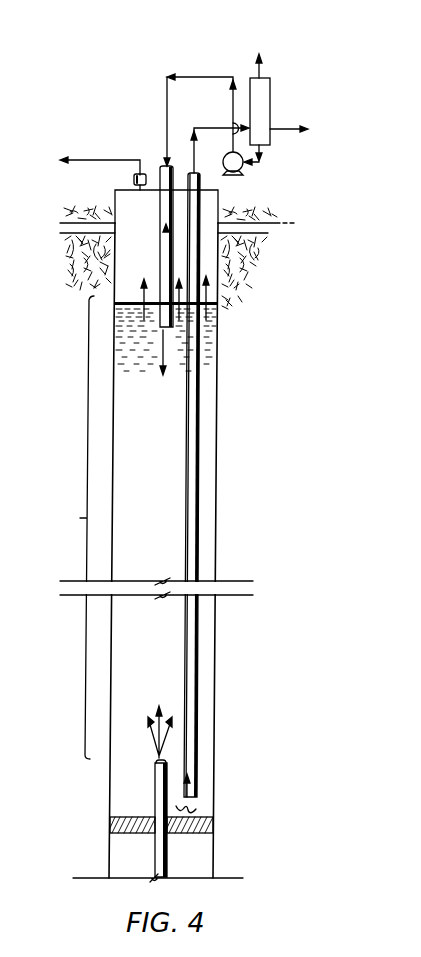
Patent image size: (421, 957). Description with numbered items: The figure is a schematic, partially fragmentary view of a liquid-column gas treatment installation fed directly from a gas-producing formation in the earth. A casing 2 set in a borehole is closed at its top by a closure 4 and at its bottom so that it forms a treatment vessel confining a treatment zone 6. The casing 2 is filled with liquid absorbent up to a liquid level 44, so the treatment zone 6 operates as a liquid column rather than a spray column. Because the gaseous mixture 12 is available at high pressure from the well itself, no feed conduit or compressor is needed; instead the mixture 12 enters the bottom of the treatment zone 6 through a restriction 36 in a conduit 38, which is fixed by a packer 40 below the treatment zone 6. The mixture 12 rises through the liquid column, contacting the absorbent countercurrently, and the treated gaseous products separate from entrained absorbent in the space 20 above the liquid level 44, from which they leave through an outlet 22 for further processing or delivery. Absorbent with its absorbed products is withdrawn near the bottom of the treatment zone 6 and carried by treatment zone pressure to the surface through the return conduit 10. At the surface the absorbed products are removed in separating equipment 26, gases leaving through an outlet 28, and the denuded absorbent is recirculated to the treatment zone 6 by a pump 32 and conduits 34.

The casing 2 is at (217, 431).
The closure 4 is at (115, 193).
The treatment zone 6 is at (81, 527).
The return conduit 10 is at (187, 655).
The gaseous mixture 12 is at (160, 722).
The space 20 is at (128, 262).
The outlet 22 is at (134, 180).
The separating equipment 26 is at (268, 116).
The outlet 28 is at (259, 73).
The pump 32 is at (242, 167).
The conduits 34 is at (198, 73).
The restriction 36 is at (157, 762).
The conduit 38 is at (162, 855).
The packer 40 is at (213, 827).
The liquid level 44 is at (116, 291).